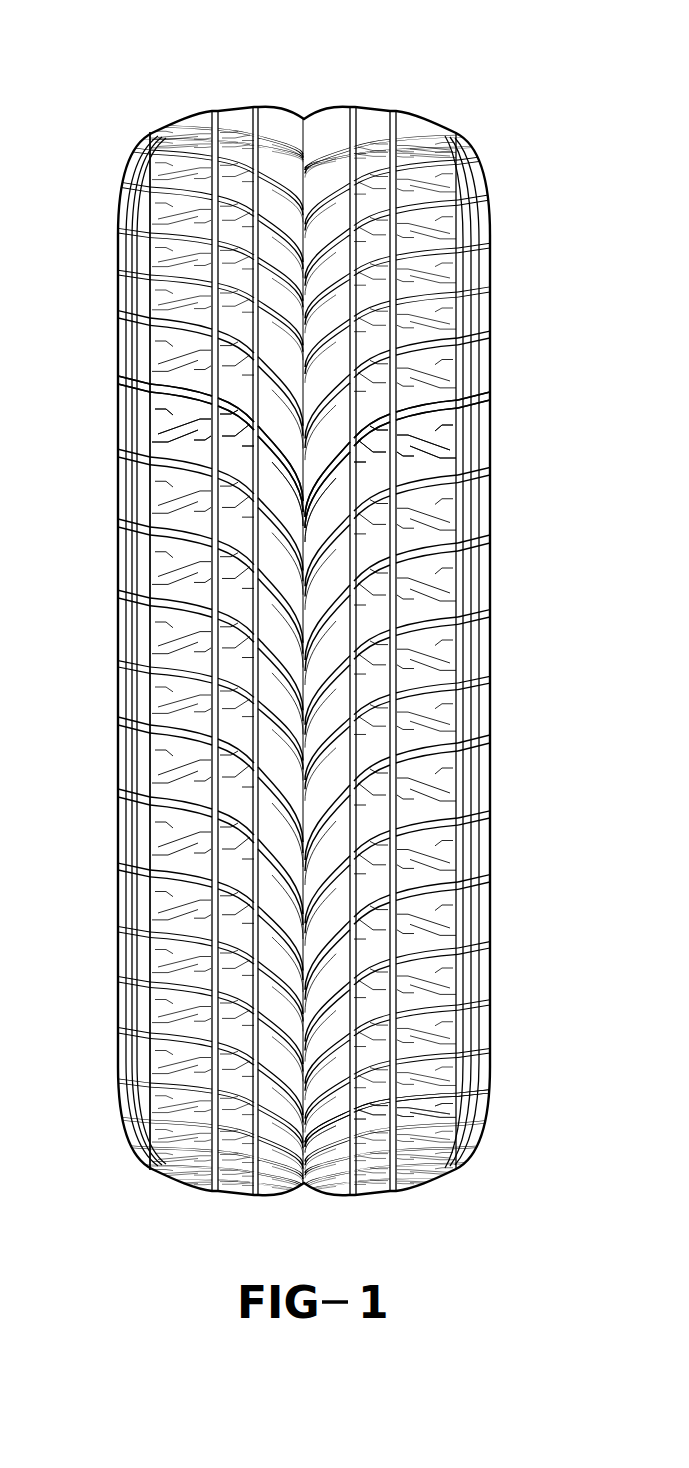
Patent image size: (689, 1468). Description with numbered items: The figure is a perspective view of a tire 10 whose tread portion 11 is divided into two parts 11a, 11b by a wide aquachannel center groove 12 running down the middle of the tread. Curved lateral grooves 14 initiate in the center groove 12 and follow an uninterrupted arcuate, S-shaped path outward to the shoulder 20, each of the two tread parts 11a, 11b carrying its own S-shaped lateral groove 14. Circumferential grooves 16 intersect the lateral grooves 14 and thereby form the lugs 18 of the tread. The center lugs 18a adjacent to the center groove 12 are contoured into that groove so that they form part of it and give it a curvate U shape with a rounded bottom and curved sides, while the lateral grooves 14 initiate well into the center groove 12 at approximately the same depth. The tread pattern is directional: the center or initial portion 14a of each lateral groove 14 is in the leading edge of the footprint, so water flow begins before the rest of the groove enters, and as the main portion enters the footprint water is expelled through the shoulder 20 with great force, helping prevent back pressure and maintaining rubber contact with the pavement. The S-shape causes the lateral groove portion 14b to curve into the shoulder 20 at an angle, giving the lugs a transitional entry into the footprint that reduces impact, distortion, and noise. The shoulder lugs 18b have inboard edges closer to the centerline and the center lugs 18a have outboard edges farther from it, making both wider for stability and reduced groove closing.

The tire 10 is at (124, 1178).
The tread portion 11 is at (458, 102).
The first tread part 11a is at (235, 112).
The second tread part 11b is at (418, 125).
The aquachannel center groove 12 is at (303, 118).
The curved lateral grooves 14 is at (415, 410).
The center or initial portion of lateral groove 14a is at (325, 1165).
The lateral groove shoulder portion 14b is at (148, 385).
The circumferential grooves 16 is at (395, 1185).
The lugs 18 is at (235, 1155).
The center lugs 18a is at (275, 1165).
The shoulder lugs 18b is at (445, 1105).
The shoulder 20 is at (118, 452).